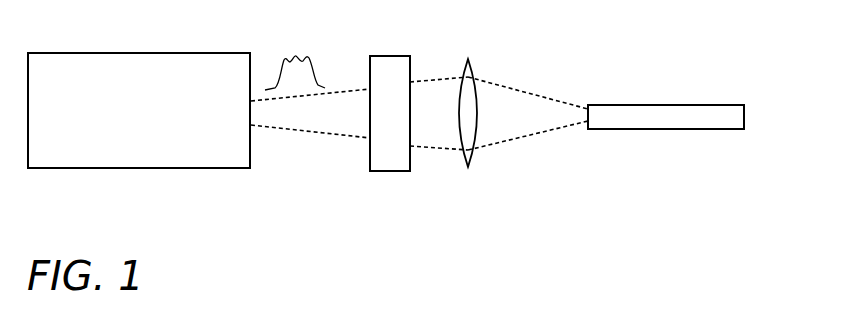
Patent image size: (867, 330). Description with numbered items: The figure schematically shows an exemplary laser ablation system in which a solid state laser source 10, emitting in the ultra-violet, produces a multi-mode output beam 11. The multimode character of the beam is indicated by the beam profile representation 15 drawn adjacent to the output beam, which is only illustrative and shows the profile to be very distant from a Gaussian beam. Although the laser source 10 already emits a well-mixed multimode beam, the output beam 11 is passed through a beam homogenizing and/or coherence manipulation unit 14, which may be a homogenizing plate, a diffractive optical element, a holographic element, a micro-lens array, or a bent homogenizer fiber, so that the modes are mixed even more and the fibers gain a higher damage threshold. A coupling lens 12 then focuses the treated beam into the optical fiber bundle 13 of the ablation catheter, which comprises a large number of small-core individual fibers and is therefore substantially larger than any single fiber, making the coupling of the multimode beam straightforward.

The solid state laser source 10 is at (182, 170).
The output beam 11 is at (322, 133).
The coupling lens 12 is at (468, 168).
The optical fiber bundle 13 is at (640, 130).
The beam homogenizing and/or coherence manipulation unit 14 is at (395, 172).
The beam profile representation 15 is at (318, 63).